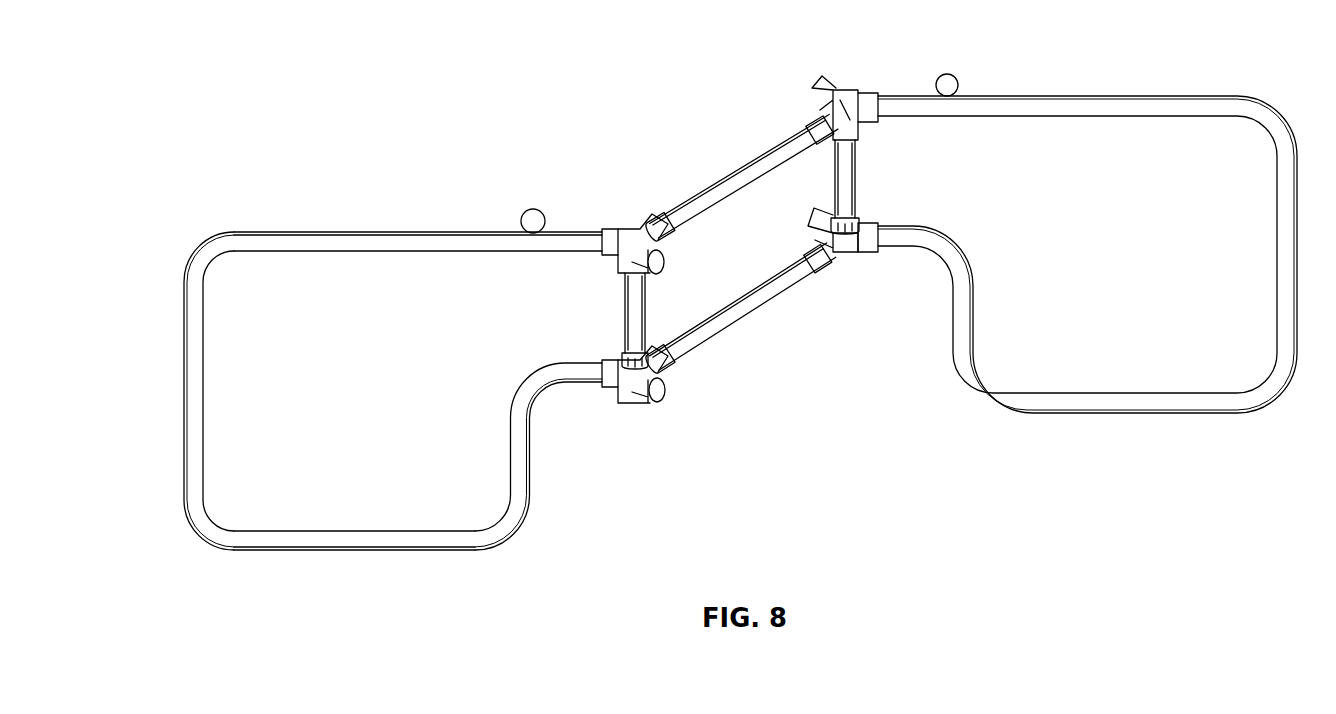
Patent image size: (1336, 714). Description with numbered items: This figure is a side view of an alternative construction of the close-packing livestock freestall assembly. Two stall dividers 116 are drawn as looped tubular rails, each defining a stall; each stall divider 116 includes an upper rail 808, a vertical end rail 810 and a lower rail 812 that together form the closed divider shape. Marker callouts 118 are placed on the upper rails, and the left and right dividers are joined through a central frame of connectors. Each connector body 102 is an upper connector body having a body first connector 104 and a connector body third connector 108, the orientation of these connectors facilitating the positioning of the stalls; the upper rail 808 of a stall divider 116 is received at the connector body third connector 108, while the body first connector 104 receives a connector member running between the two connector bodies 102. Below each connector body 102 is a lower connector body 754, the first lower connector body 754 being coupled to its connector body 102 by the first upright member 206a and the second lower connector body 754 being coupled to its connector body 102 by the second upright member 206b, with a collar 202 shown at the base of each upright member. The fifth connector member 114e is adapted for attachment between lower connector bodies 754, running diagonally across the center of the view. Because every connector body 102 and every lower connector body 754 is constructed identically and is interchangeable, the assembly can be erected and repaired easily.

The connector body 102 is at (616, 232).
The body first connector 104 is at (672, 220).
The connector body third connector 108 is at (600, 242).
The fifth connector member 114e is at (740, 305).
The stall divider 116 is at (1172, 108).
The marker 118 is at (533, 209).
The collar 202 is at (628, 279).
The first upright member 206a is at (630, 322).
The second upright member 206b is at (852, 188).
The lower connector body 754 is at (617, 383).
The upper rail 808 is at (306, 245).
The vertical end rail 810 is at (190, 378).
The lower rail 812 is at (348, 540).